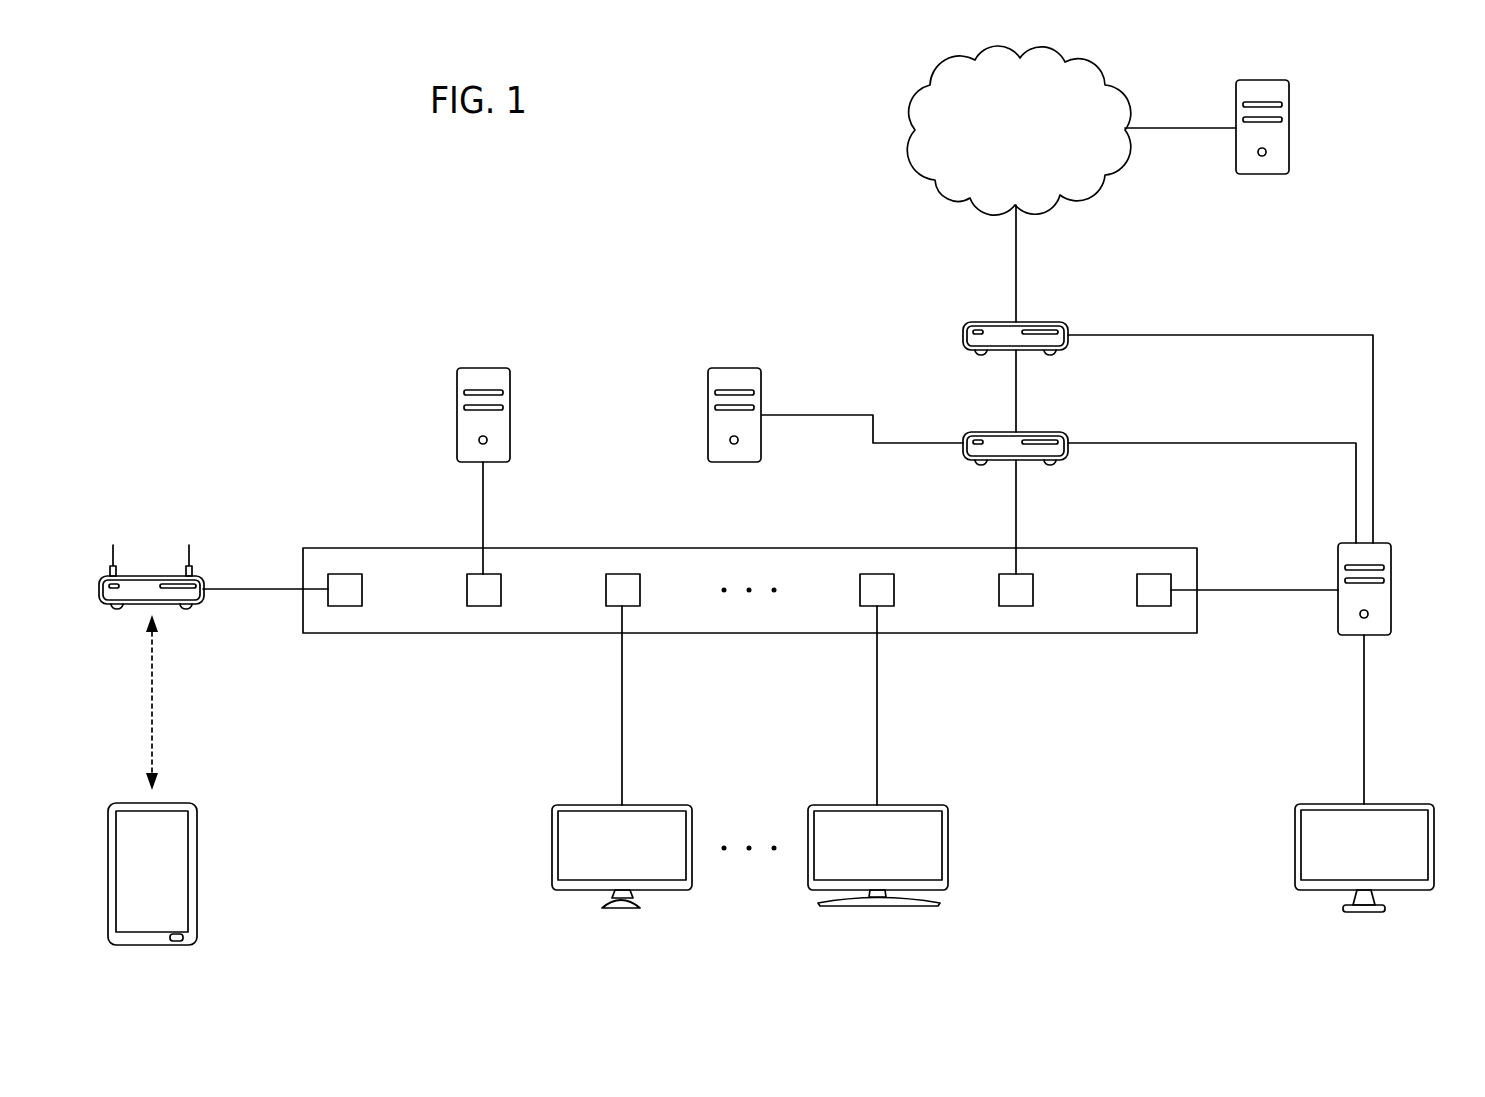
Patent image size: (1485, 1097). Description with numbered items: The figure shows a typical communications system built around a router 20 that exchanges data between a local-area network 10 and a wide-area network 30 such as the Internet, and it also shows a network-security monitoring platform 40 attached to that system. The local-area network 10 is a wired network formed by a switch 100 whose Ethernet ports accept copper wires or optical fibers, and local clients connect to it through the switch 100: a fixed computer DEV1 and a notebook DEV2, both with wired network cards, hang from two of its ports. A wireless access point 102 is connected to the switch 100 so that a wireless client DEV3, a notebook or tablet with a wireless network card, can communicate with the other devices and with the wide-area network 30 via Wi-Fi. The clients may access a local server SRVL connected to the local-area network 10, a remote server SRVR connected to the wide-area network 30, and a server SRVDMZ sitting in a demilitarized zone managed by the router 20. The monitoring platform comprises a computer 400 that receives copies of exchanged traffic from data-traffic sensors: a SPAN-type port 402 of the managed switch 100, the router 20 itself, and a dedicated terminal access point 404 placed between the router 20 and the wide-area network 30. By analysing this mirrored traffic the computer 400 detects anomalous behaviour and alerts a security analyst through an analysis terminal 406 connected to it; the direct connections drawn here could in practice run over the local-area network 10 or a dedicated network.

The local-area network 10 is at (784, 500).
The router 20 is at (1068, 436).
The wide-area network 30 is at (918, 160).
The monitoring system 40 is at (1353, 690).
The switch 100 is at (751, 597).
The access point 102 is at (205, 578).
The computer 400 is at (1378, 630).
The SPAN port data-traffic sensor 402 is at (1152, 572).
The terminal access point 404 is at (1055, 322).
The analysis terminal 406 is at (1300, 890).
The local server SRVL is at (483, 368).
The DMZ server SRVDMZ is at (735, 368).
The remote server SRVR is at (1268, 175).
The fixed computer DEV1 is at (686, 890).
The notebook DEV2 is at (947, 882).
The wireless local client DEV3 is at (199, 862).